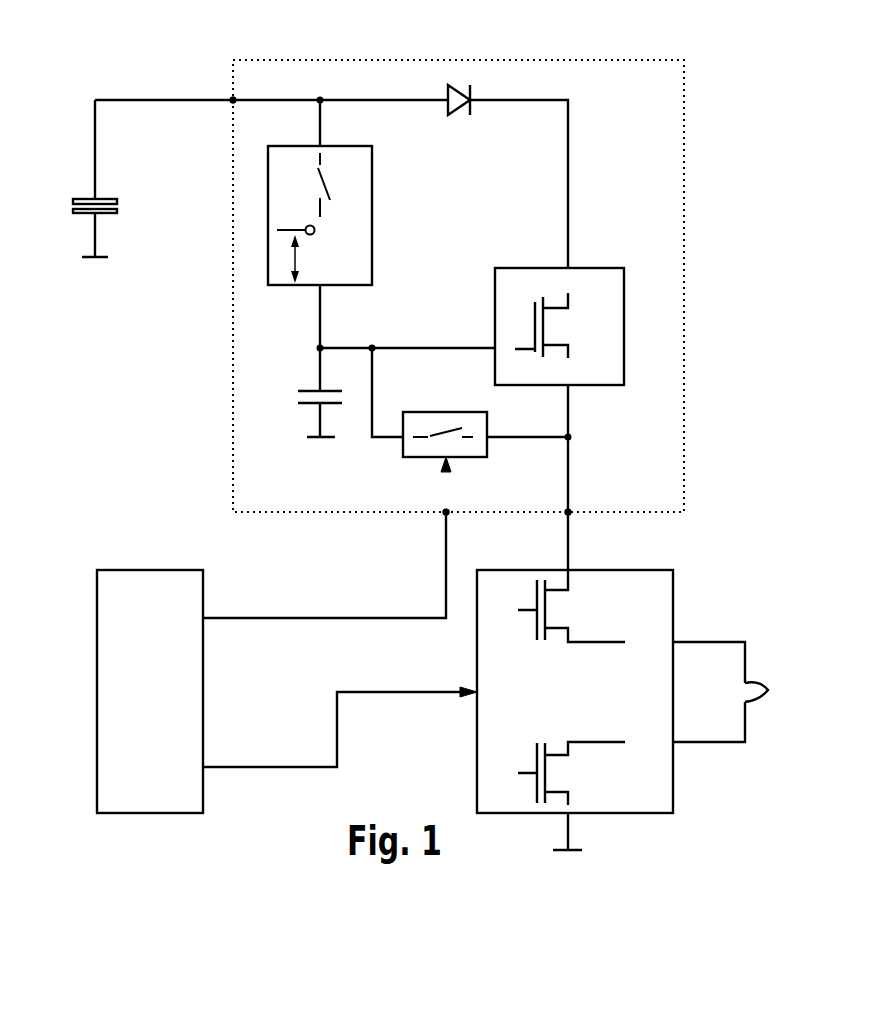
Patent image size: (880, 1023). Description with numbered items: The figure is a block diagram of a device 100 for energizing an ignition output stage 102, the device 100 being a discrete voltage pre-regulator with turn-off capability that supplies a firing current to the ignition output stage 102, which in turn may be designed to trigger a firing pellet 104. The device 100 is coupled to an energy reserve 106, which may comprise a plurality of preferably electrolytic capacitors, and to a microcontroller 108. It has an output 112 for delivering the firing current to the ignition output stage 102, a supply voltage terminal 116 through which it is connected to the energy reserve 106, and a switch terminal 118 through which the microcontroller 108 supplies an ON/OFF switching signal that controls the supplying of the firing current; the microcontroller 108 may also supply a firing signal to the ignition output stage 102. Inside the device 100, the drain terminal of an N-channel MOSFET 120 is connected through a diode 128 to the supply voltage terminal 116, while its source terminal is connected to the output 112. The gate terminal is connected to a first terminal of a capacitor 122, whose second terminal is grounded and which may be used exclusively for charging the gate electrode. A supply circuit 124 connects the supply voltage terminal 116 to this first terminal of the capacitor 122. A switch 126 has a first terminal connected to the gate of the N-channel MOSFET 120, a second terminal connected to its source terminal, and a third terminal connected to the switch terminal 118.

The device 100 is at (231, 74).
The ignition output stage 102 is at (655, 600).
The firing pellet 104 is at (760, 700).
The energy reserve 106 is at (85, 198).
The microcontroller 108 is at (150, 615).
The output 112 is at (571, 517).
The supply voltage terminal 116 is at (231, 102).
The switch terminal 118 is at (442, 517).
The N-channel MOSFET 120 is at (610, 348).
The capacitor 122 is at (303, 389).
The supply circuit 124 is at (282, 198).
The switch 126 is at (442, 410).
The diode 128 is at (473, 93).